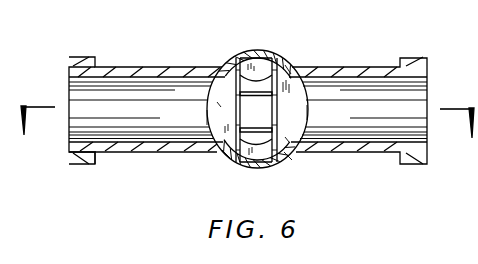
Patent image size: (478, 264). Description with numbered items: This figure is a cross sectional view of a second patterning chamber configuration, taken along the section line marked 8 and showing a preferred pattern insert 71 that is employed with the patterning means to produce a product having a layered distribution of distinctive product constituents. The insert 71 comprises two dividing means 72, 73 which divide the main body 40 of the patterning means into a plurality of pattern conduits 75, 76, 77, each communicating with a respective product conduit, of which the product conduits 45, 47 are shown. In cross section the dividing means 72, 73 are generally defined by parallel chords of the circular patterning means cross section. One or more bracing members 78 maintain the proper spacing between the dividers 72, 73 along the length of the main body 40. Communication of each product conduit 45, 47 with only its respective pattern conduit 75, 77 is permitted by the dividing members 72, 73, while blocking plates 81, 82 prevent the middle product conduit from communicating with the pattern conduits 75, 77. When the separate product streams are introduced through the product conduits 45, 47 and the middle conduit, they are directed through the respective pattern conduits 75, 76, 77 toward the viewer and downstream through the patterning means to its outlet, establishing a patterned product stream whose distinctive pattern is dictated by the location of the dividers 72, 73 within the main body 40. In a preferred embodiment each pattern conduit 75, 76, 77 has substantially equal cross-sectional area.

The section line 8- 8 is at (247, 133).
The main body 40 is at (248, 174).
The product conduit 45 is at (121, 66).
The product conduit 47 is at (370, 66).
The pattern insert 71 is at (283, 70).
The dividing means 72 is at (226, 156).
The dividing means 73 is at (287, 157).
The pattern conduit 75 is at (210, 119).
The pattern conduit 76 is at (258, 62).
The pattern conduit 77 is at (306, 114).
The bracing member 78 is at (257, 128).
The blocking plate 81 is at (233, 100).
The blocking plate 82 is at (302, 136).